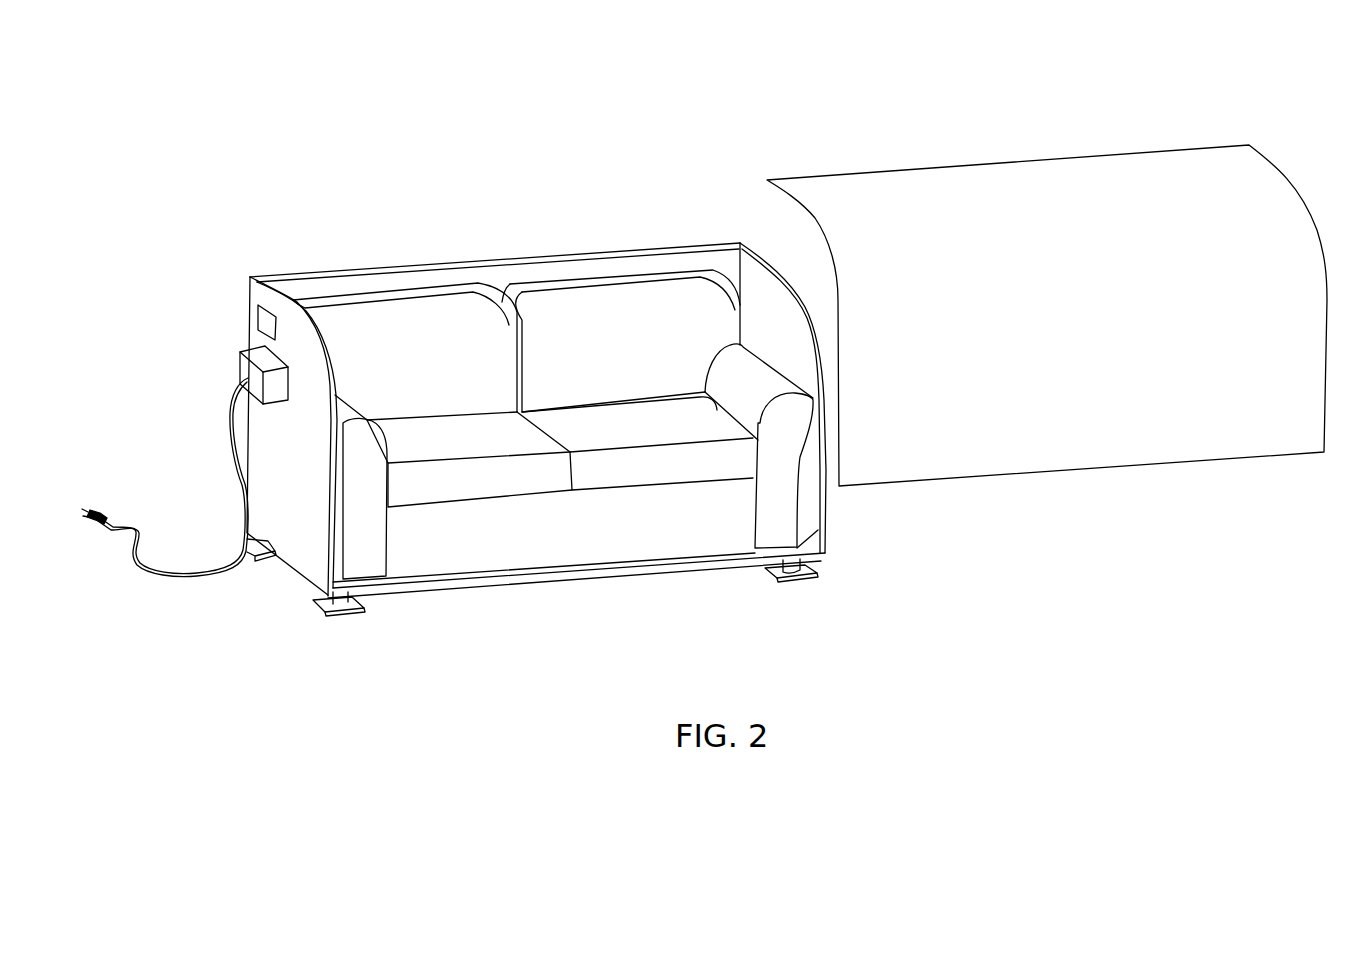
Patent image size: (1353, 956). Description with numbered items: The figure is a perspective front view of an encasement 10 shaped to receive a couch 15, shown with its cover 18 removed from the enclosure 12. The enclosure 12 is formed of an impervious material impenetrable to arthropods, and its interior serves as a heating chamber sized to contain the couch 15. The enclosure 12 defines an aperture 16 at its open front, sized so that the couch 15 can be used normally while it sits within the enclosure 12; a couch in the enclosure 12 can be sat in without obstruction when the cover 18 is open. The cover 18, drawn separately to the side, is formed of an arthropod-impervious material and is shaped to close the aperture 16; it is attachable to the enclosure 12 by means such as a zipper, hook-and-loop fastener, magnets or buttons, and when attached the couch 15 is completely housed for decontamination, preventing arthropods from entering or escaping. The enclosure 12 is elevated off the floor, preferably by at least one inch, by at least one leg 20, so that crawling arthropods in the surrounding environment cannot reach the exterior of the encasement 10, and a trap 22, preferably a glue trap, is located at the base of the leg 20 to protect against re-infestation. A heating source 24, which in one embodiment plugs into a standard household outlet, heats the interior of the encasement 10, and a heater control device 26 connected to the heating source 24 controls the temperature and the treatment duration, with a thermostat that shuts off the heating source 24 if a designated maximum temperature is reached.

The encasement 10 is at (206, 179).
The enclosure 12 is at (289, 266).
The couch 15 is at (578, 545).
The aperture 16 is at (776, 290).
The cover 18 is at (1299, 136).
The leg 20 is at (322, 596).
The trap 22 is at (809, 590).
The heating source 24 is at (238, 360).
The heater control device 26 is at (252, 316).